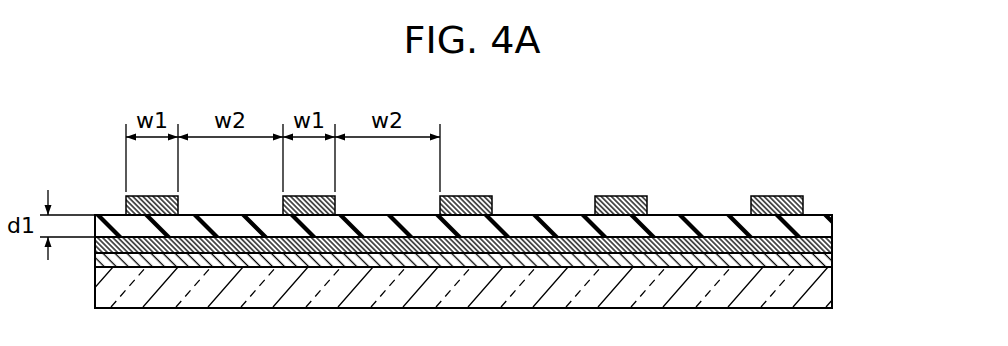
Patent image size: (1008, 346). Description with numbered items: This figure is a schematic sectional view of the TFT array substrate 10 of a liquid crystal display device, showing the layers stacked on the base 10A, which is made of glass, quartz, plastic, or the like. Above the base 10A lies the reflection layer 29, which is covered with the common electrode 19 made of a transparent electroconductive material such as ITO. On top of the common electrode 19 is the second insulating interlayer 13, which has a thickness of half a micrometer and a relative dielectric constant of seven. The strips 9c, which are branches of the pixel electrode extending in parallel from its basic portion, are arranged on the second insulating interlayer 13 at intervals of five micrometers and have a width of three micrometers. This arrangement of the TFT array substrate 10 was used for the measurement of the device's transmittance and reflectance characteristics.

The TFT array substrate 10 is at (853, 185).
The base 10A is at (818, 290).
The reflection layer 29 is at (828, 259).
The common electrode 19 is at (828, 247).
The second insulating interlayer 13 is at (831, 226).
The strips 9c is at (474, 196).